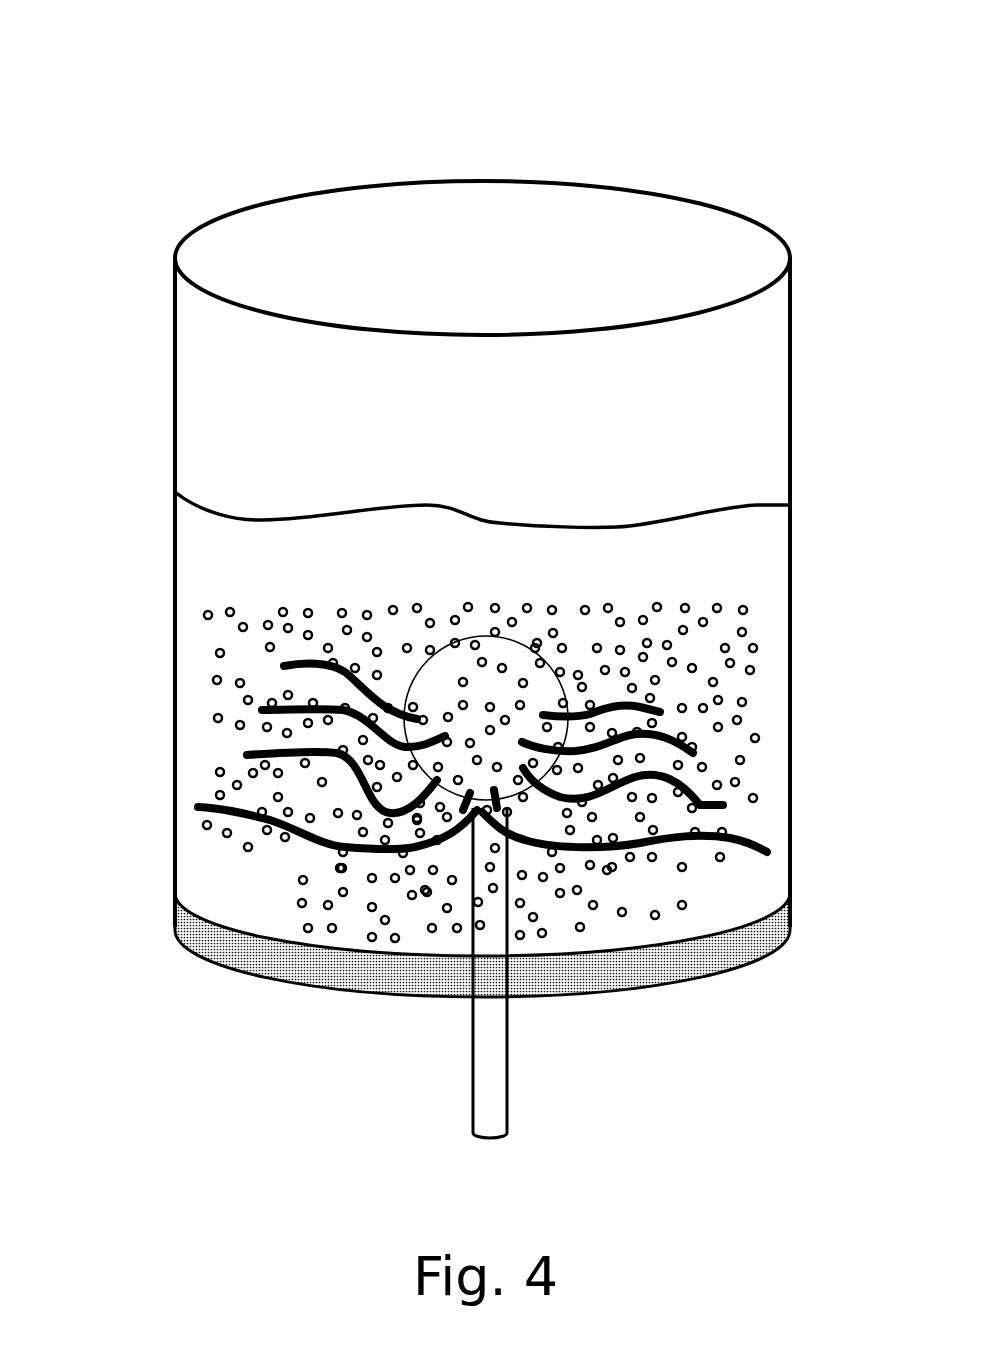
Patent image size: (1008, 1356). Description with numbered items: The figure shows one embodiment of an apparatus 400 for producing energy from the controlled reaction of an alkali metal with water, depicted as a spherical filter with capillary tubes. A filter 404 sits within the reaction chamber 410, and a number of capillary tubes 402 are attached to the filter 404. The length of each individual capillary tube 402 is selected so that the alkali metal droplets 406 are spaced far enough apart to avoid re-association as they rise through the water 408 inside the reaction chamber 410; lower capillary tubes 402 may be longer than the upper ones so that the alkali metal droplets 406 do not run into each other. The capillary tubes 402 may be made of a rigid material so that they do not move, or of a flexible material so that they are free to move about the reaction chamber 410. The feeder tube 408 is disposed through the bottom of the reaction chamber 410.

The apparatus 400 is at (222, 116).
The capillary tubes 402 is at (283, 666).
The filter 404 is at (478, 810).
The alkali metal droplets 406 is at (755, 738).
The water 408 is at (452, 550).
The reaction chamber 410 is at (567, 376).